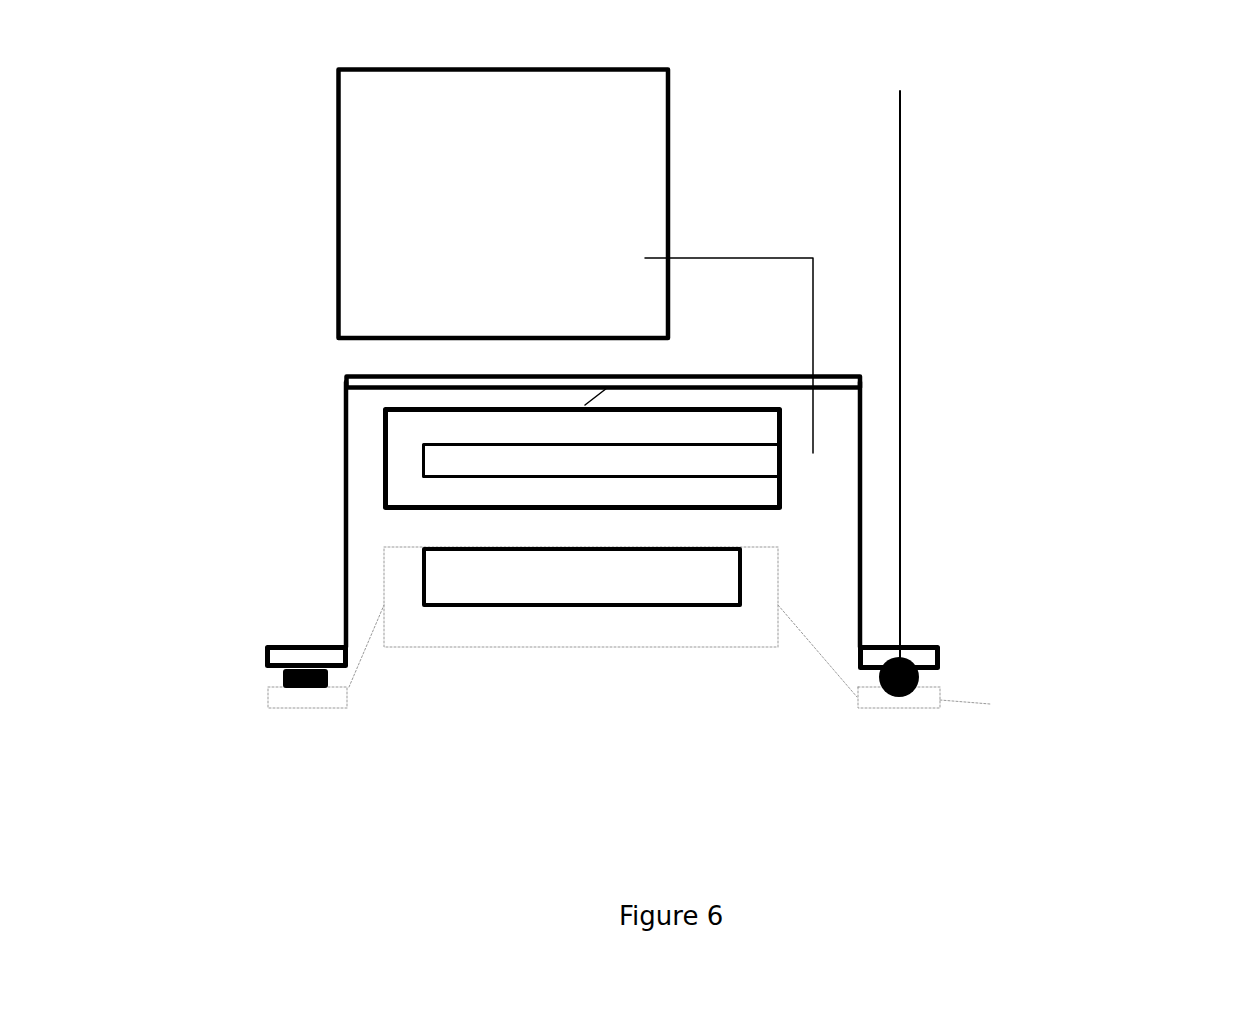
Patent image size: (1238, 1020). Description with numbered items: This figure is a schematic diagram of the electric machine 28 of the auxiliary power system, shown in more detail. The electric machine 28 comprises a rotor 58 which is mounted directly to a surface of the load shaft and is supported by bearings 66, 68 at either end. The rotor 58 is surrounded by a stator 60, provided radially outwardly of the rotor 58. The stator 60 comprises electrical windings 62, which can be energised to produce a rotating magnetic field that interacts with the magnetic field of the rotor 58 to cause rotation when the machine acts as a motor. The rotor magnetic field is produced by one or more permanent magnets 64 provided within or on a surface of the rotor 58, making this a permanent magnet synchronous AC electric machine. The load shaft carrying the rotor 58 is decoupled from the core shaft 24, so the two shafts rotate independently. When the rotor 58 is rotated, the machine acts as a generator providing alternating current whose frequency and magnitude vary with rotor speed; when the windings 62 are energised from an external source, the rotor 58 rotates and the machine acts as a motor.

The core shaft 24 is at (336, 179).
The electric machine 28 is at (993, 508).
The rotor 58 is at (582, 650).
The stator 60 is at (383, 457).
The electrical windings 62 is at (780, 460).
The permanent magnets 64 is at (672, 605).
The bearing 66 is at (265, 656).
The bearing 68 is at (940, 658).